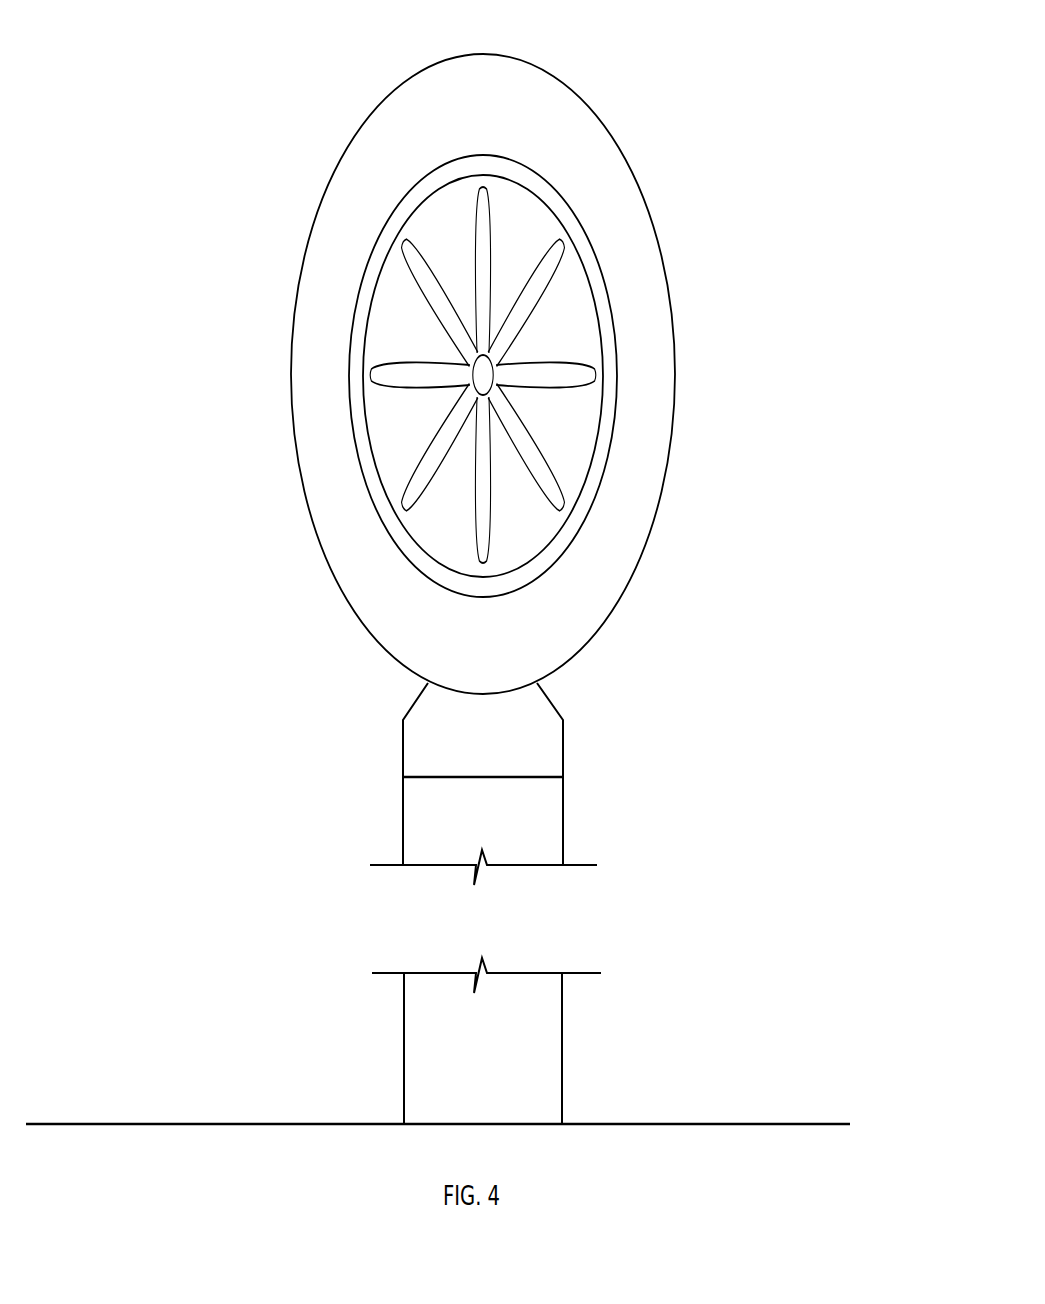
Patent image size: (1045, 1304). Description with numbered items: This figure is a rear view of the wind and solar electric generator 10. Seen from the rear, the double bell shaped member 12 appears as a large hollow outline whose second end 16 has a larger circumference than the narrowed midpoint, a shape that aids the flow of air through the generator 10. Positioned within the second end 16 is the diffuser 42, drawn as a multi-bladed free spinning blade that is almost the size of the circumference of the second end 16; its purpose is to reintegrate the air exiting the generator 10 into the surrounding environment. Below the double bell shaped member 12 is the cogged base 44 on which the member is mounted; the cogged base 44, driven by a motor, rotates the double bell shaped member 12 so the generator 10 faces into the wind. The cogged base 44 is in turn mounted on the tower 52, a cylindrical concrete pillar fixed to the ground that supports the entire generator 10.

The wind and solar electric generator 10 is at (724, 127).
The double bell shaped member 12 is at (637, 450).
The second end 16 is at (592, 516).
The diffuser 42 is at (582, 372).
The cogged base 44 is at (544, 746).
The tower 52 is at (539, 1044).